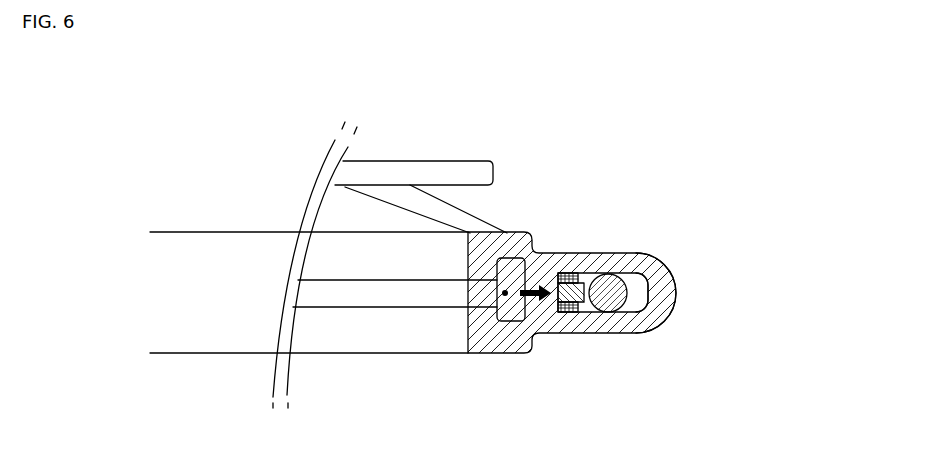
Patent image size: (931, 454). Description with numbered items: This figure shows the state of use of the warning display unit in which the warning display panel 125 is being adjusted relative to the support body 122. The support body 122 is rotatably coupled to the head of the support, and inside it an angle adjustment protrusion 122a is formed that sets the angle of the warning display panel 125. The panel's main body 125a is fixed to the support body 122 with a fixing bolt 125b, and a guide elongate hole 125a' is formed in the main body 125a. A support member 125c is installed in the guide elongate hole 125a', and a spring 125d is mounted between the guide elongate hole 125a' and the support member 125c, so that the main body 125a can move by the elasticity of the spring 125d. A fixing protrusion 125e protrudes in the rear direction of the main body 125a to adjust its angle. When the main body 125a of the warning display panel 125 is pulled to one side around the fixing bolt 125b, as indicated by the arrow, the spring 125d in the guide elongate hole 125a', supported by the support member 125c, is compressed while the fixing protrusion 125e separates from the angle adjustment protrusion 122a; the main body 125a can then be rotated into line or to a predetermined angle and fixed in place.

The support body 122 is at (324, 176).
The angle adjustment protrusion 122a is at (464, 222).
The warning display panel 125 is at (228, 226).
The main body 125a is at (714, 293).
The guide elongate hole 125a' is at (665, 348).
The fixing bolt 125b is at (620, 314).
The support member 125c is at (580, 273).
The spring 125d is at (560, 273).
The fixing protrusion 125e is at (508, 354).